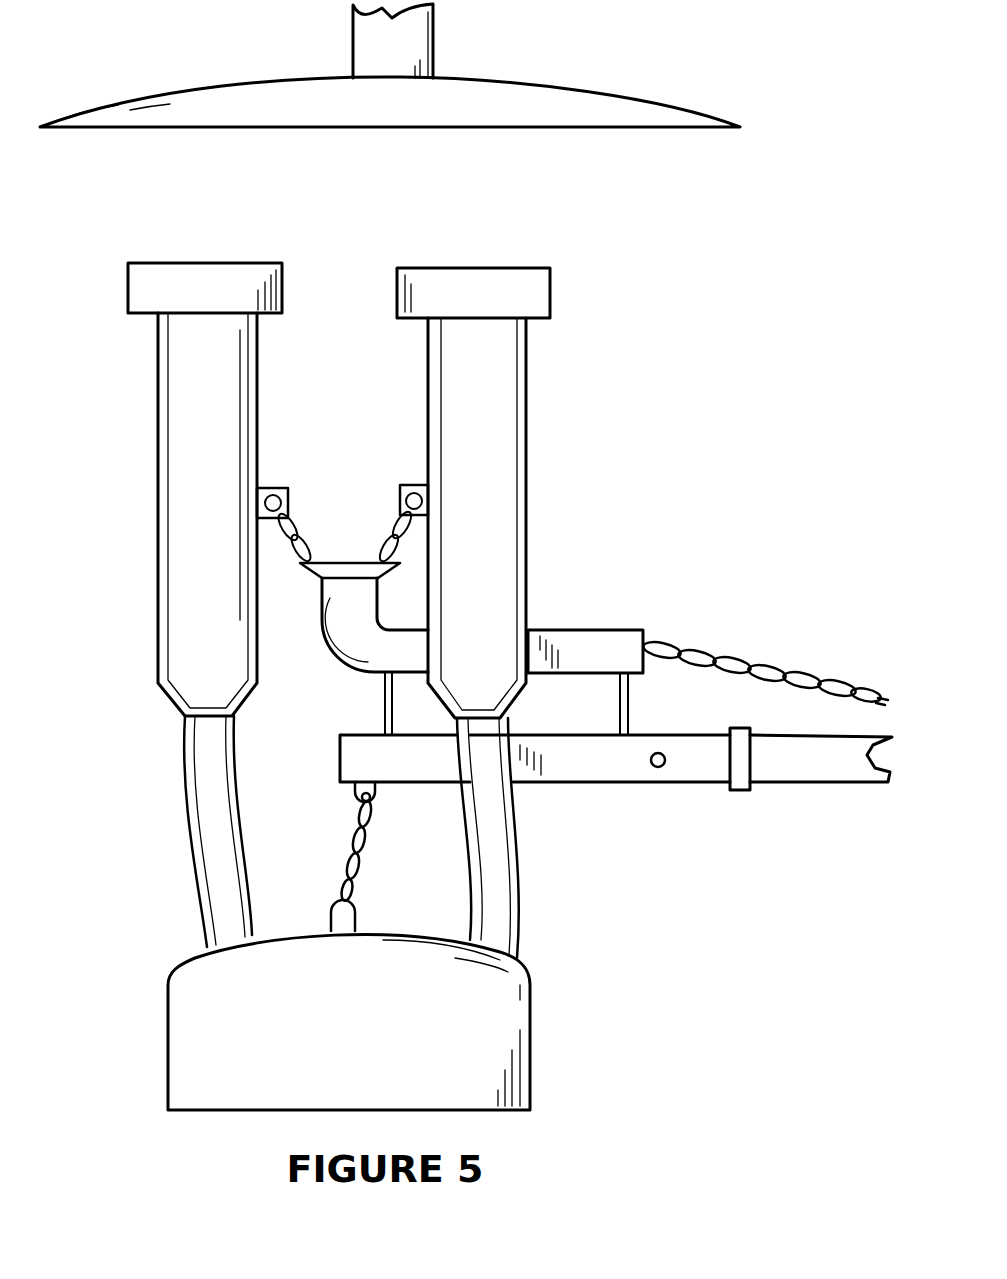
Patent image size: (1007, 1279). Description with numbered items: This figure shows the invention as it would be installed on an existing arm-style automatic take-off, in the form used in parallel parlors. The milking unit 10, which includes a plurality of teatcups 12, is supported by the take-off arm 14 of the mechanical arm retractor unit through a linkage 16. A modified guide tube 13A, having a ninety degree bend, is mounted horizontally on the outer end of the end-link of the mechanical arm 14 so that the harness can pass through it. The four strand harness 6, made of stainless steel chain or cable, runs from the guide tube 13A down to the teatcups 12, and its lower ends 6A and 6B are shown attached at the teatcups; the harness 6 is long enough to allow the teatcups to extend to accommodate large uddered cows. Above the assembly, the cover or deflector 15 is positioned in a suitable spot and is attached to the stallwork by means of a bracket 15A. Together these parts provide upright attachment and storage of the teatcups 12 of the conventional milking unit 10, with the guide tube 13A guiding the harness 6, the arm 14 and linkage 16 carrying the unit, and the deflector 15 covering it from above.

The cover or deflector 15 is at (510, 77).
The bracket 15A is at (352, 40).
The teatcup 12 is at (158, 475).
The lower end of harness 6A is at (288, 511).
The lower end of harness 6B is at (398, 511).
The modified guide tube 13A is at (612, 628).
The four strand harness 6 is at (750, 665).
The end arm link 14 is at (605, 785).
The linkage 16 is at (357, 830).
The milking unit 10 is at (168, 983).